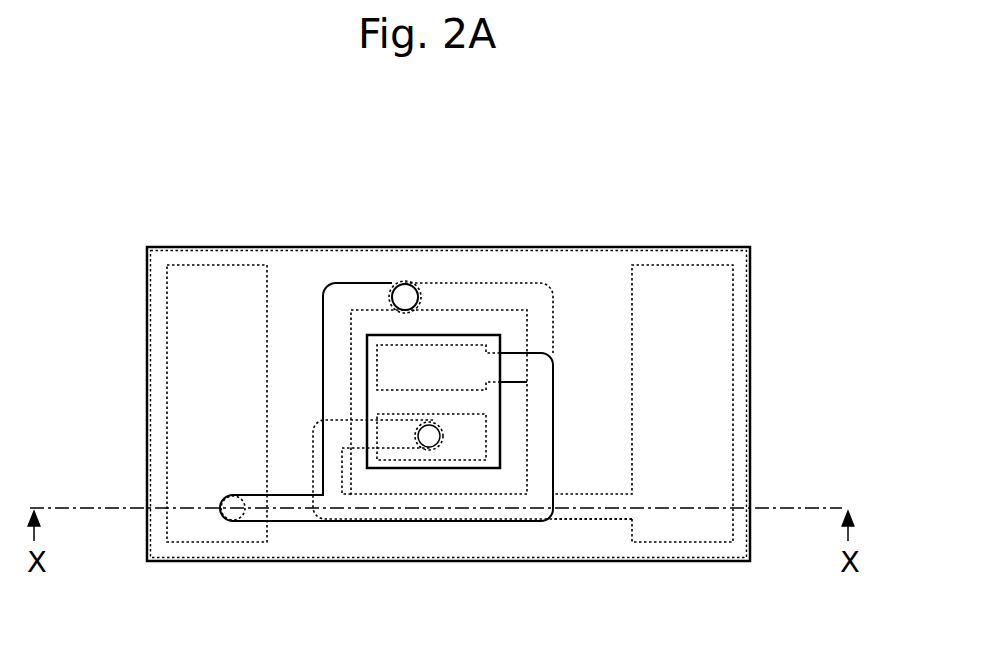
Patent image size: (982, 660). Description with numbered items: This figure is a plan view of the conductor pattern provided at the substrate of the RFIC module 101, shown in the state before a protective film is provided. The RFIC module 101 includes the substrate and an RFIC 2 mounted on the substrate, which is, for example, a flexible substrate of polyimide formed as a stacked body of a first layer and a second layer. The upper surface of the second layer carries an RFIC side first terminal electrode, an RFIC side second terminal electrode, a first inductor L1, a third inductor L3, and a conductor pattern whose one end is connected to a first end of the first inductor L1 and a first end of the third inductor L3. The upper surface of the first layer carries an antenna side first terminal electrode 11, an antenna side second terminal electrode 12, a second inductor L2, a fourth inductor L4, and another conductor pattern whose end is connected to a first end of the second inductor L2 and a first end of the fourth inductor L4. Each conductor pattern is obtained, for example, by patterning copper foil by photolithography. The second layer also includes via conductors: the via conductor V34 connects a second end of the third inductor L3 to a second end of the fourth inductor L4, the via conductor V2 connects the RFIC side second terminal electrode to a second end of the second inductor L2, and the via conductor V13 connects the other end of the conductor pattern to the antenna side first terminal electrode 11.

The RFIC module 101 is at (765, 171).
The antenna side first terminal electrode 11 is at (185, 405).
The antenna side second terminal electrode 12 is at (703, 404).
The RFIC 2 is at (452, 334).
The first inductor L1 is at (541, 437).
The second inductor L2 is at (313, 465).
The third inductor L3 is at (333, 337).
The fourth inductor L4 is at (514, 293).
The via conductor V34 is at (405, 281).
The via conductor V13 is at (232, 522).
The via conductor V2 is at (429, 451).